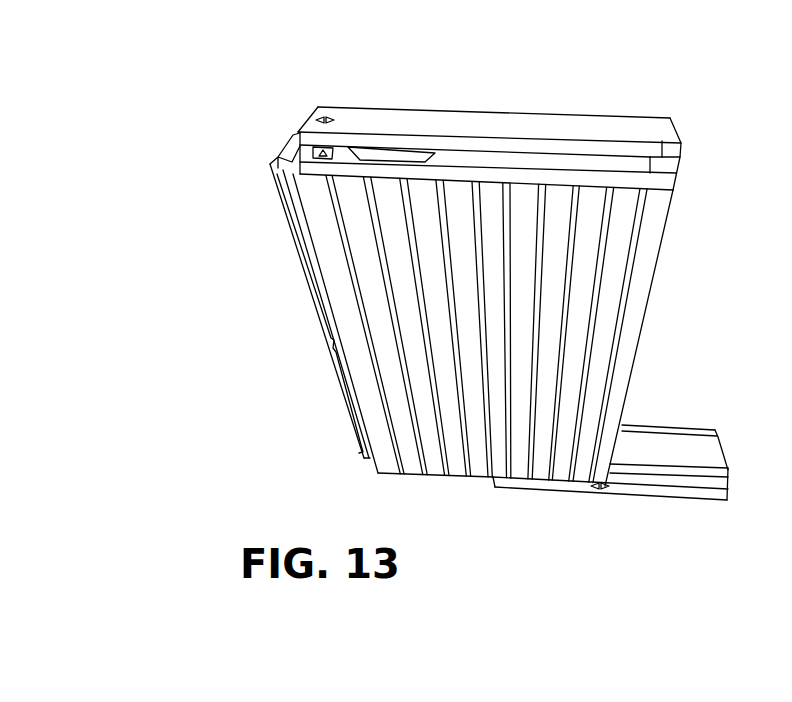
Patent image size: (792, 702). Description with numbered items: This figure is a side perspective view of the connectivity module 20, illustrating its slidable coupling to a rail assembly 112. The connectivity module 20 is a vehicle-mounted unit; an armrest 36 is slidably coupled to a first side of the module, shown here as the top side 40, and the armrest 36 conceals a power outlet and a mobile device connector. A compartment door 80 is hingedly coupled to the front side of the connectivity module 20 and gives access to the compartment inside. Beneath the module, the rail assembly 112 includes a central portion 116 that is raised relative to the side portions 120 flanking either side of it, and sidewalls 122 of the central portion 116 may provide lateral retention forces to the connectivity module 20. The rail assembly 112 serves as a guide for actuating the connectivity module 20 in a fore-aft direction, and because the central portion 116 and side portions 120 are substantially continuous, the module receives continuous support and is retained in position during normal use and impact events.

The connectivity module 20 is at (419, 64).
The armrest 36 is at (552, 130).
The top side 40 is at (653, 120).
The compartment door 80 is at (268, 161).
The rail assembly 112 is at (724, 450).
The central portion 116 is at (685, 448).
The side portions 120 is at (657, 430).
The sidewalls 122 is at (657, 466).